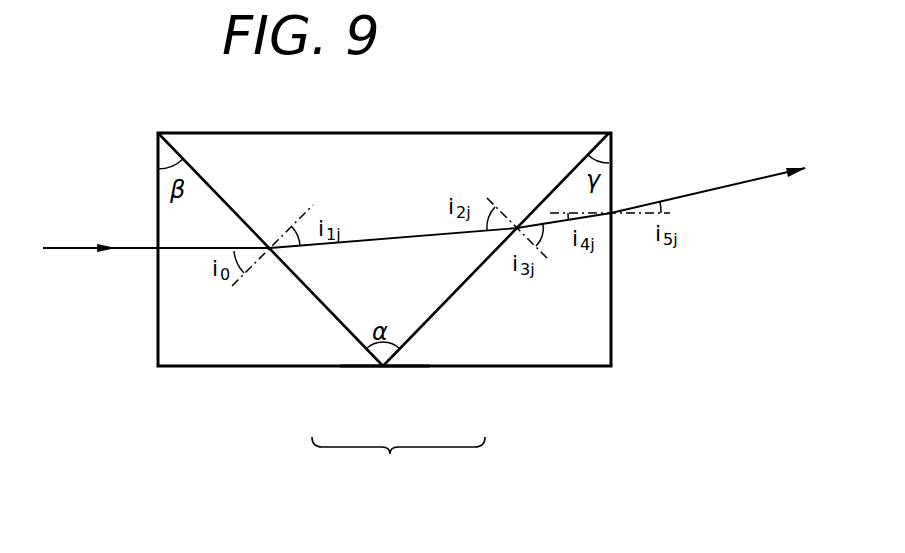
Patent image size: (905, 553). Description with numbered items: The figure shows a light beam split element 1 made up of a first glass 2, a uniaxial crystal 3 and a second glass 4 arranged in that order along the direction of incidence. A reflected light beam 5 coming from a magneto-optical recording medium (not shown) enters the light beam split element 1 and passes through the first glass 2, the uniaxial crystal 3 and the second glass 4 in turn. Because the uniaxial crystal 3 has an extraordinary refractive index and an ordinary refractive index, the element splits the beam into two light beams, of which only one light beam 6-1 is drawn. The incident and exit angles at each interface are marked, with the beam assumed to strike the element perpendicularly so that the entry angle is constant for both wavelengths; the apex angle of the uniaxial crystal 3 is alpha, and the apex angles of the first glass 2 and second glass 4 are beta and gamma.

The light beam split element 1 is at (384, 310).
The first glass 2 is at (322, 345).
The uniaxial crystal 3 is at (408, 345).
The second glass 4 is at (470, 347).
The reflected light beam 5 is at (72, 250).
The light beam 6-1 is at (710, 190).